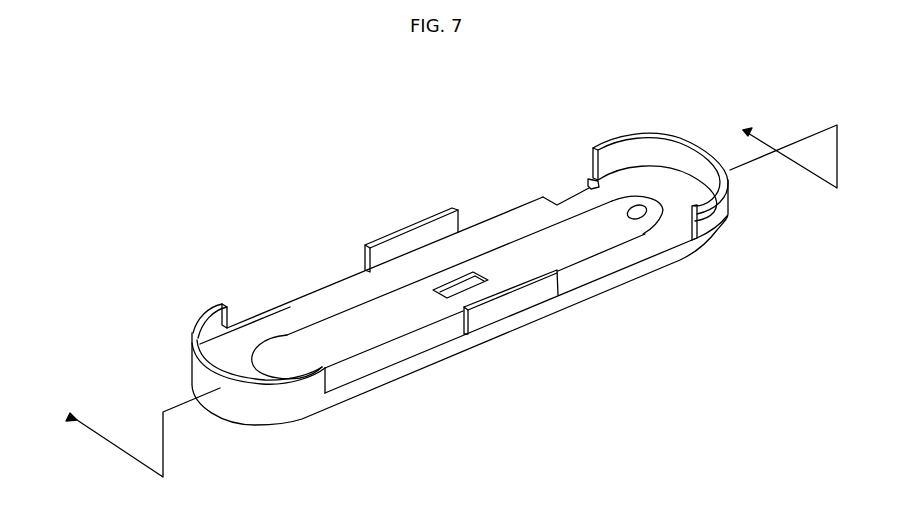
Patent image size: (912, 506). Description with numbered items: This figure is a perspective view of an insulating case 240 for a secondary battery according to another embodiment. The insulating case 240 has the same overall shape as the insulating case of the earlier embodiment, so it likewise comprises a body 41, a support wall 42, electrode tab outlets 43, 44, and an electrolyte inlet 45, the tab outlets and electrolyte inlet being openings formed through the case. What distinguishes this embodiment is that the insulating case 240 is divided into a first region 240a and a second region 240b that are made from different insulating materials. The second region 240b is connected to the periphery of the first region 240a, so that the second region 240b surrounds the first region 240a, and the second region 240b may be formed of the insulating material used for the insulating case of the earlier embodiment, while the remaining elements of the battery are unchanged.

The insulating case 240 is at (178, 310).
The first region 240a is at (347, 327).
The second region 240b is at (287, 317).
The body 41 is at (511, 213).
The support wall 42 is at (652, 152).
The electrode tab outlet 43 is at (573, 193).
The electrode tab outlet 44 is at (452, 299).
The electrolyte inlet 45 is at (641, 214).